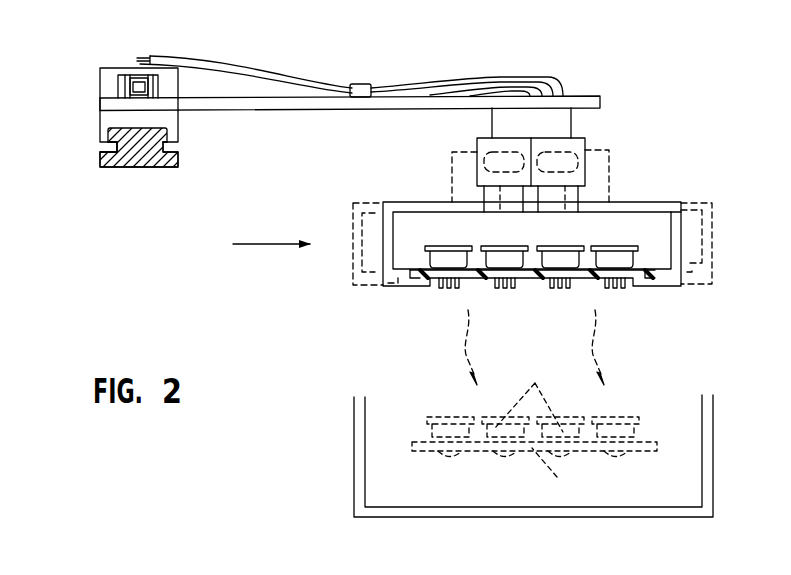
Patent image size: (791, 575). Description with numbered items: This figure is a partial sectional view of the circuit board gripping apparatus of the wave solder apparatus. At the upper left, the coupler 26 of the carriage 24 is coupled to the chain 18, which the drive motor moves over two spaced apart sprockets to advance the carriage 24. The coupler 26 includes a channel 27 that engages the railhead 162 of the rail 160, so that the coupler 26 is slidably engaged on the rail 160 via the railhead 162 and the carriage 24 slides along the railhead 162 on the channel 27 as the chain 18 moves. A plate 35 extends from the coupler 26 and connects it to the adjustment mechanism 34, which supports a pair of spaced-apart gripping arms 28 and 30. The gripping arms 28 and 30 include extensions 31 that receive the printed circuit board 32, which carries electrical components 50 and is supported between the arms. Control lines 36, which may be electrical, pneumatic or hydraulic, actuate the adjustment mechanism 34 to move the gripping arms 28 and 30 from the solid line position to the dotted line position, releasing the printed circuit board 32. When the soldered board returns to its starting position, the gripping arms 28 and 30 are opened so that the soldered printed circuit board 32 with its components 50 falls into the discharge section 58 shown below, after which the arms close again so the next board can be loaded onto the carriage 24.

The chain 18 is at (137, 83).
The carriage 24 is at (262, 247).
The coupler 26 is at (106, 121).
The channel 27 is at (160, 124).
The gripping arm 28 is at (412, 202).
The gripping arm 30 is at (662, 205).
The extensions 31 is at (422, 279).
The printed circuit board 32 is at (523, 285).
The adjustment mechanism 34 is at (576, 133).
The plate 35 is at (332, 103).
The control lines 36 is at (488, 70).
The electrical components 50 is at (503, 257).
The discharge section 58 is at (357, 463).
The rail 160 is at (147, 168).
The railhead 162 is at (110, 163).